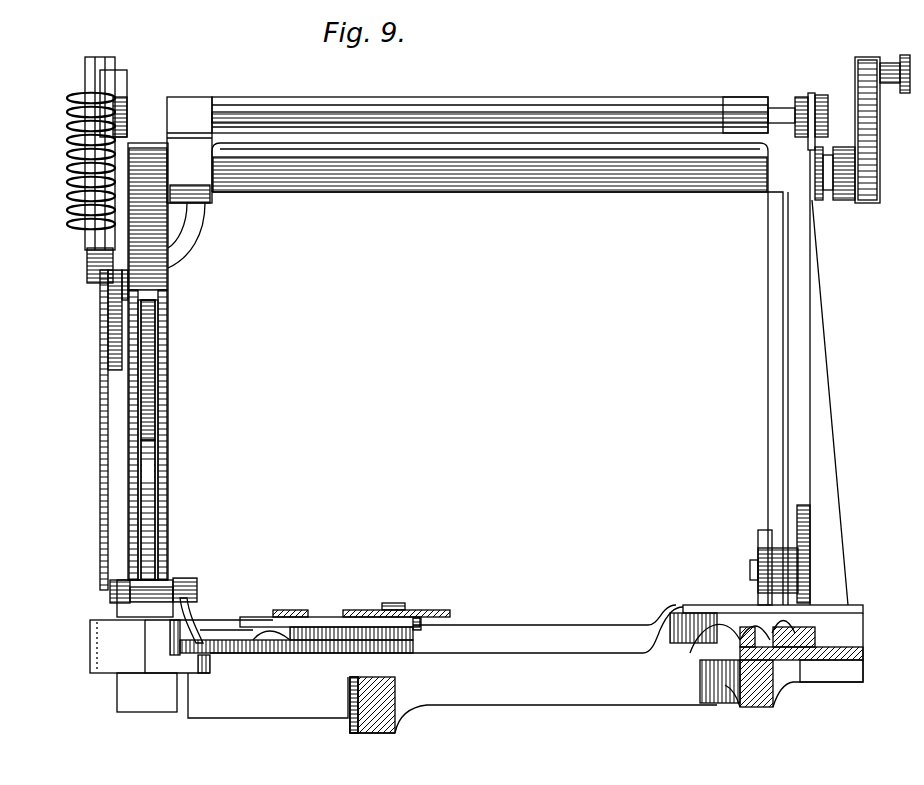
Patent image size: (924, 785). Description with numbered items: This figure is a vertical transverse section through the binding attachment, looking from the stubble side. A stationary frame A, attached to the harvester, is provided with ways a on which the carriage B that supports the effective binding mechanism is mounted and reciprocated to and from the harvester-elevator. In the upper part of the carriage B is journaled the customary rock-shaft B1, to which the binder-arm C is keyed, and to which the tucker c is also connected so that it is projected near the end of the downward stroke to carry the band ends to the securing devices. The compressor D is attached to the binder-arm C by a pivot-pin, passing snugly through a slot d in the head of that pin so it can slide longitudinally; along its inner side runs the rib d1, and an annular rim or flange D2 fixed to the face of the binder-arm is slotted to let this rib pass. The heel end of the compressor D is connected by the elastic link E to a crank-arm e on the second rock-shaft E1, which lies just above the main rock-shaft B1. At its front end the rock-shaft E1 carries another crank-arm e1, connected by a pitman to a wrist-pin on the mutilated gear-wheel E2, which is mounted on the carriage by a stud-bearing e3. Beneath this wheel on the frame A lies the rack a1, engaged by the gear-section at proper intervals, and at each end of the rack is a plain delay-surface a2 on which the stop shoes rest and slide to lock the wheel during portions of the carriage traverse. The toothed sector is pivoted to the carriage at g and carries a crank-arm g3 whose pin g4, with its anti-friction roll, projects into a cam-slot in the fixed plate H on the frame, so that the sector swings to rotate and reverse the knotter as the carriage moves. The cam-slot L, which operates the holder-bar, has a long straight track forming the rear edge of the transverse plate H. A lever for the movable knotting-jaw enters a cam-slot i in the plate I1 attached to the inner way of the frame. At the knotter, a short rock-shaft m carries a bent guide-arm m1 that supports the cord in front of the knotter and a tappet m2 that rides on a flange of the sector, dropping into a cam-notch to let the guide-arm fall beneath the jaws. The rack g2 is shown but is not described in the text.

The rock-shaft E1 is at (462, 100).
The crank-arm e1 is at (823, 97).
The rock-shaft B1 is at (444, 194).
The mutilated gear-wheel E2 is at (836, 546).
The stud-bearing e3 is at (755, 583).
The stationary frame A is at (779, 656).
The ways a is at (800, 660).
The rack a1 is at (815, 637).
The delay-surface a2 is at (833, 669).
The carriage B is at (403, 669).
The cam-slot i is at (348, 694).
The plate I1 is at (350, 722).
The pivot g is at (296, 643).
The lower rack g2 is at (208, 653).
The crank-arm g3 is at (421, 626).
The pin g4 is at (372, 610).
The fixed plate H is at (348, 609).
The cam-slot L is at (266, 610).
The compressor D is at (125, 366).
The rib d1 is at (108, 326).
The binder-arm C is at (160, 414).
The tucker c is at (148, 470).
The annular rim or flange D2 is at (168, 270).
The elastic link E is at (79, 153).
The crank-arm e is at (114, 102).
The slot d is at (94, 281).
The guide-arm m1 is at (118, 581).
The rock-shaft m is at (145, 598).
The tappet m2 is at (200, 608).